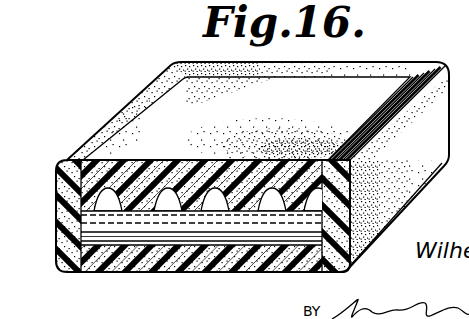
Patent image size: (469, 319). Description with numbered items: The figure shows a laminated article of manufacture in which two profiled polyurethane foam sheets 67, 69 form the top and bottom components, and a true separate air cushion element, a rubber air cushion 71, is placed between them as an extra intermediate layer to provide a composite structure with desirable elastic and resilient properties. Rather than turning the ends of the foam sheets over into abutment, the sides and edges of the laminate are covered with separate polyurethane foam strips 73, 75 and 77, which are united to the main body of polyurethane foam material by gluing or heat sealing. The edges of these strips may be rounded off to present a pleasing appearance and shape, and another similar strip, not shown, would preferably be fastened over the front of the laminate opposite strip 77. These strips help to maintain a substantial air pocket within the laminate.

The profiled polyurethane foam sheet 67 is at (151, 121).
The profiled polyurethane foam sheet 69 is at (118, 262).
The rubber air cushion 71 is at (188, 238).
The polyurethane foam strip 73 is at (78, 149).
The polyurethane foam strip 75 is at (418, 181).
The polyurethane foam strip 77 is at (375, 65).